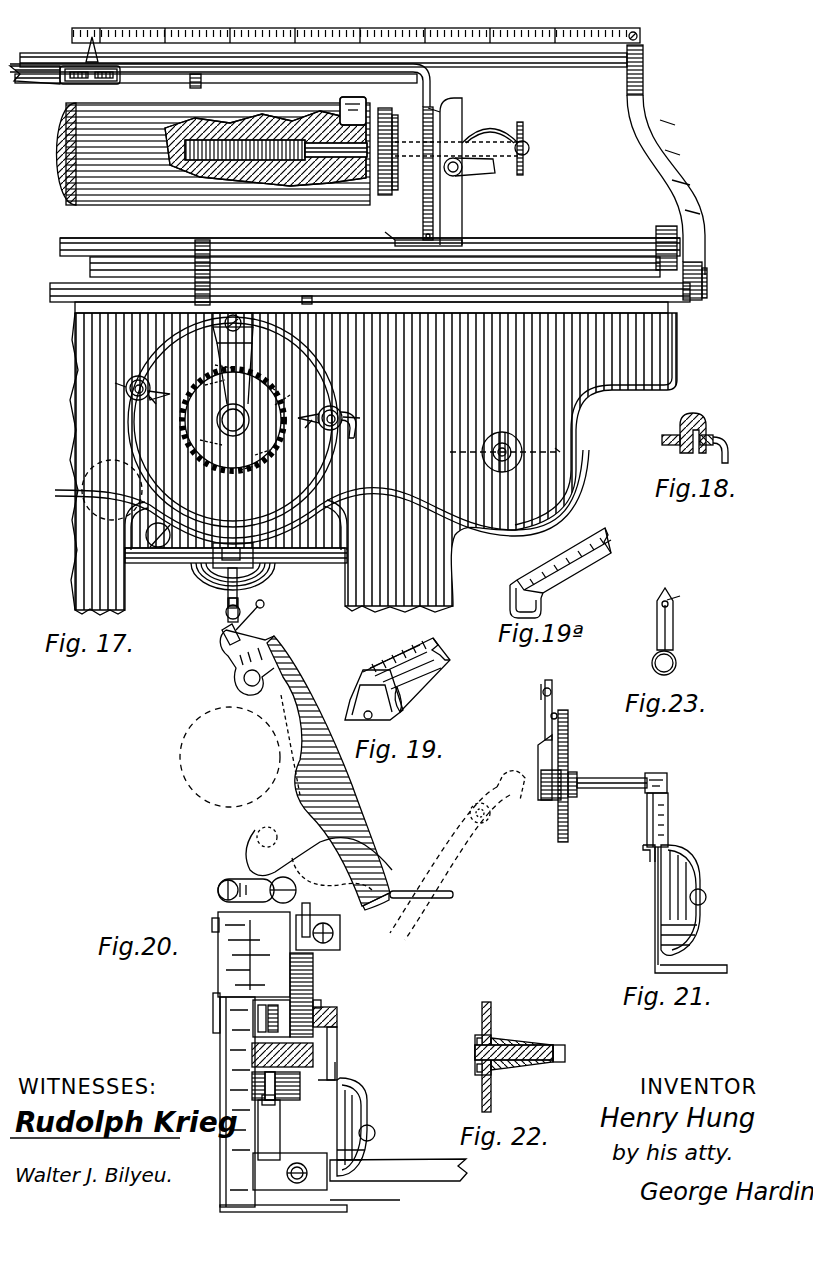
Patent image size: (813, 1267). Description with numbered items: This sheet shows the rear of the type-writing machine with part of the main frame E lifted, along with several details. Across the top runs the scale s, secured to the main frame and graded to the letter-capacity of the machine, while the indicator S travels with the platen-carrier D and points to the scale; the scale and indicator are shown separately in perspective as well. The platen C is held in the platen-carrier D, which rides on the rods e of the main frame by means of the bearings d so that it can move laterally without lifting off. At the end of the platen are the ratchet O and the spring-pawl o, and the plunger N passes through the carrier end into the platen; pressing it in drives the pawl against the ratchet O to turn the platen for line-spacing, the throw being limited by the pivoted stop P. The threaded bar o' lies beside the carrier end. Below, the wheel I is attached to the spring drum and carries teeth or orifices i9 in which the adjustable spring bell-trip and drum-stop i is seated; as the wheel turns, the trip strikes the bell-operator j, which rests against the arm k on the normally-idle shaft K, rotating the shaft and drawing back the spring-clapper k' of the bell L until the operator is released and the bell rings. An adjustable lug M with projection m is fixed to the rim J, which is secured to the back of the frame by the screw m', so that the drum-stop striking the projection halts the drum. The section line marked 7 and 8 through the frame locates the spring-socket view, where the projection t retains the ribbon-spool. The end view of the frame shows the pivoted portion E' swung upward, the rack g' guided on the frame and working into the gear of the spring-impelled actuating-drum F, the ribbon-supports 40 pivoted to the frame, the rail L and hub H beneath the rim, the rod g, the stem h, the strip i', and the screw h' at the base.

In FIG. 17, the scale s is at (372, 28).
In FIG. 19, the scale s is at (368, 670).
In FIG. 20, the scale s is at (512, 790).
In FIG. 17, the indicator S is at (86, 53).
In FIG. 19A, the indicator S is at (566, 578).
In FIG. 20, the indicator S is at (224, 634).
In FIG. 17, the rods e is at (581, 58).
In FIG. 20, the rods e is at (246, 683).
In FIG. 17, the bearings d is at (201, 86).
In FIG. 17, the platen C is at (214, 151).
In FIG. 17, the ratchet O is at (388, 161).
In FIG. 17, the spring-pawl o' is at (418, 172).
In FIG. 17, the spring-pawl o is at (423, 227).
In FIG. 17, the platen-carrier D is at (455, 110).
In FIG. 17, the plunger N is at (528, 146).
In FIG. 17, the stop P is at (478, 174).
In FIG. 17, the main frame E is at (380, 330).
In FIG. 20, the main frame E is at (286, 953).
In FIG. 17, the portion of main frame E' is at (680, 167).
In FIG. 20, the portion of main frame E' is at (372, 785).
In FIG. 17, the rod / link g is at (370, 240).
In FIG. 20, the rod / link g is at (286, 798).
In FIG. 17, the rim J is at (327, 460).
In FIG. 17, the arm k is at (233, 418).
In FIG. 21, the arm k is at (541, 767).
In FIG. 20, the arm k is at (240, 797).
In FIG. 17, the wheel I is at (242, 365).
In FIG. 21, the wheel I is at (568, 804).
In FIG. 17, the teeth or orifices i9 is at (290, 396).
In FIG. 17, the adjustable lug M is at (139, 376).
In FIG. 18, the adjustable lug M is at (712, 421).
In FIG. 17, the screw m' is at (244, 398).
In FIG. 18, the screw m' is at (733, 450).
In FIG. 17, the projection m is at (231, 419).
In FIG. 18, the projection m is at (664, 447).
In FIG. 17, the section line 7 is at (501, 452).
In FIG. 17, the section line 8 is at (561, 452).
In FIG. 17, the spring-clapper k' is at (126, 503).
In FIG. 21, the spring-clapper k' is at (687, 883).
In FIG. 20, the spring-clapper k' is at (342, 1053).
In FIG. 17, the bell L is at (290, 545).
In FIG. 21, the bell L is at (690, 930).
In FIG. 20, the bell L is at (352, 1092).
In FIG. 17, the hub / beam H is at (285, 558).
In FIG. 20, the hub / beam H is at (398, 1179).
In FIG. 17, the stem h is at (248, 588).
In FIG. 23, the adjustable spring bell-trip and drum-stop i is at (664, 631).
In FIG. 21, the adjustable spring bell-trip and drum-stop i is at (565, 711).
In FIG. 21, the bell-operator j is at (543, 694).
In FIG. 20, the bell-operator j is at (214, 926).
In FIG. 21, the strip i' is at (555, 710).
In FIG. 21, the shaft K is at (600, 778).
In FIG. 22, the projection t is at (530, 1040).
In FIG. 20, the ribbon-supports 40 is at (455, 896).
In FIG. 20, the rack g' is at (318, 917).
In FIG. 20, the spring-impelled actuating-drum F is at (283, 995).
In FIG. 20, the screw h' is at (290, 1171).